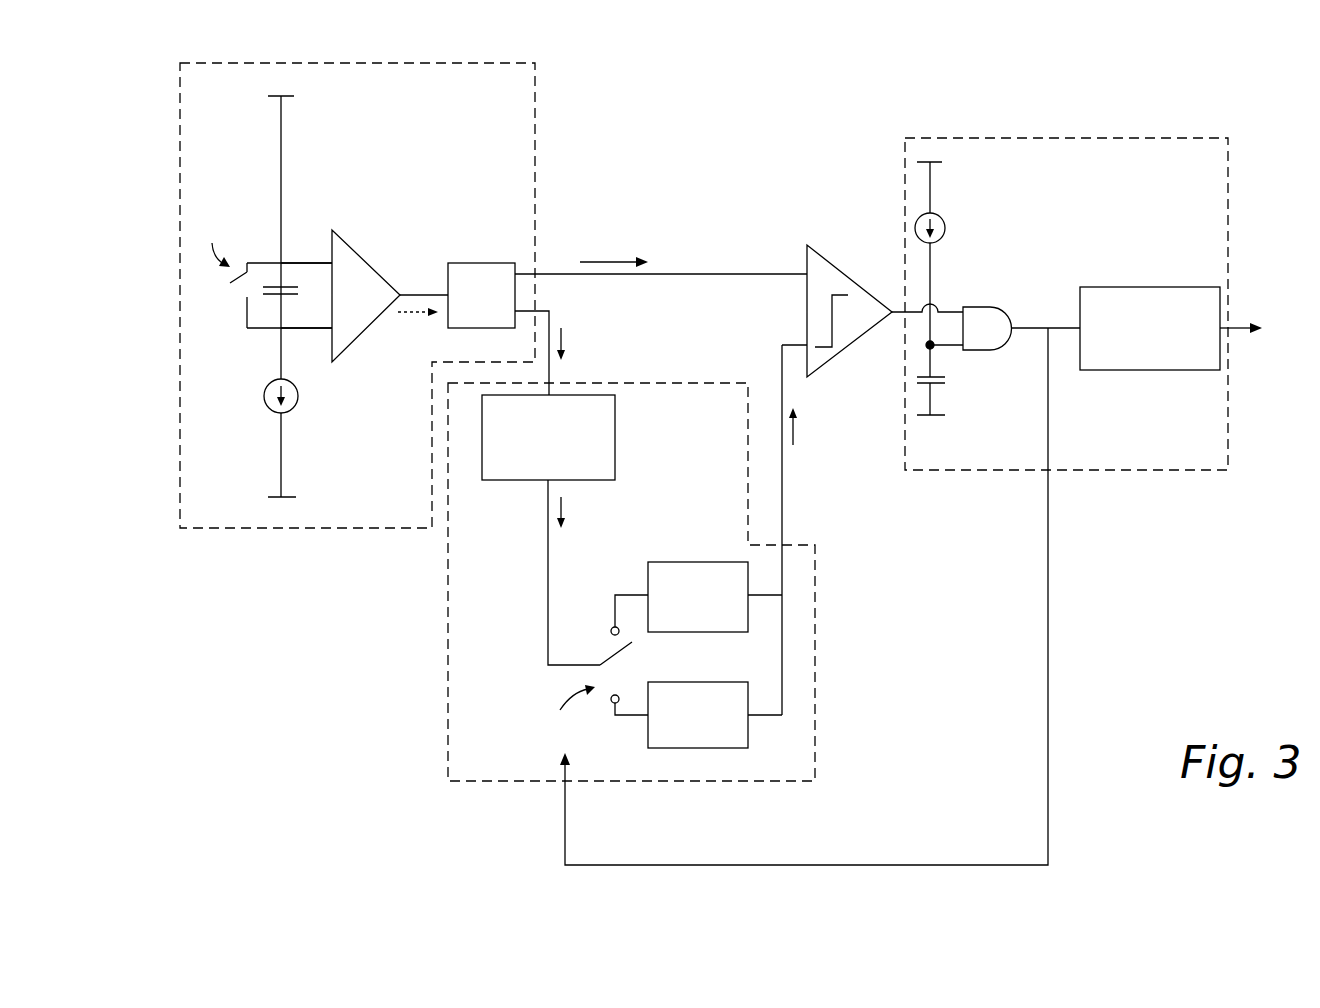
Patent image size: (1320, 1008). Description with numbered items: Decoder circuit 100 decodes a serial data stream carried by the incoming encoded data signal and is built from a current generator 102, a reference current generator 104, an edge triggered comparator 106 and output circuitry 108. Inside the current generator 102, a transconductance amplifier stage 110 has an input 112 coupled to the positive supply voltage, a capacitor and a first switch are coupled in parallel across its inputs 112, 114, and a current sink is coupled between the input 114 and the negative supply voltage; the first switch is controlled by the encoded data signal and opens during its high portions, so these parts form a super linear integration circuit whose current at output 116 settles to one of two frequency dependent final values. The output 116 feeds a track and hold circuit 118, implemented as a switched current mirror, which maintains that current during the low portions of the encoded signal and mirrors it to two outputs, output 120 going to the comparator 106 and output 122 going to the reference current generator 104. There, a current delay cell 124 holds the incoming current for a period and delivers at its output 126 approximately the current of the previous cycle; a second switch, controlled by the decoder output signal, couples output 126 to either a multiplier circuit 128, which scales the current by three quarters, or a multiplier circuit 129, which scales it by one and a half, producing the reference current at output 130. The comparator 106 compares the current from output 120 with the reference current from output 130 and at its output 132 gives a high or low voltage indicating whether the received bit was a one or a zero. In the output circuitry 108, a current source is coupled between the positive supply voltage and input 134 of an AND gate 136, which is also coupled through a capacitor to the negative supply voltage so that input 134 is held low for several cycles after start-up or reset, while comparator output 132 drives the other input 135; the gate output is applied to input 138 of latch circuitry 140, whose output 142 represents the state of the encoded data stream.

The decoder circuit 100 is at (772, 88).
The current generator 102 is at (415, 63).
The reference current generator 104 is at (448, 658).
The edge triggered comparator 106 is at (807, 262).
The output circuitry 108 is at (1047, 138).
The transconductance amplifier stage 110 is at (367, 266).
The input 112 is at (300, 263).
The input 114 is at (313, 328).
The output 116 is at (420, 293).
The track and hold circuit 118 is at (470, 263).
The output 120 is at (682, 275).
The output 122 is at (549, 316).
The current delay cell 124 is at (615, 440).
The output 126 is at (548, 540).
The multiplier circuit 128 is at (698, 632).
The multiplier circuit 129 is at (697, 748).
The output 130 is at (782, 475).
The output 132 is at (892, 316).
The input 134 is at (955, 345).
The input 135 is at (938, 310).
The AND gate 136 is at (998, 307).
The input 138 is at (1058, 326).
The latch circuitry 140 is at (1150, 370).
The output 142 is at (1235, 335).